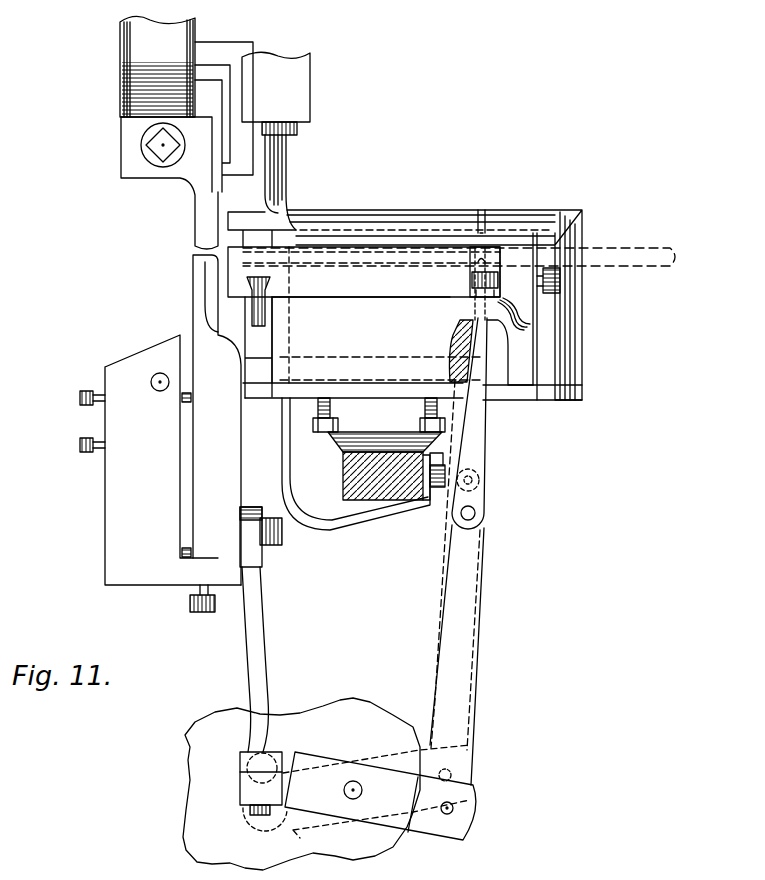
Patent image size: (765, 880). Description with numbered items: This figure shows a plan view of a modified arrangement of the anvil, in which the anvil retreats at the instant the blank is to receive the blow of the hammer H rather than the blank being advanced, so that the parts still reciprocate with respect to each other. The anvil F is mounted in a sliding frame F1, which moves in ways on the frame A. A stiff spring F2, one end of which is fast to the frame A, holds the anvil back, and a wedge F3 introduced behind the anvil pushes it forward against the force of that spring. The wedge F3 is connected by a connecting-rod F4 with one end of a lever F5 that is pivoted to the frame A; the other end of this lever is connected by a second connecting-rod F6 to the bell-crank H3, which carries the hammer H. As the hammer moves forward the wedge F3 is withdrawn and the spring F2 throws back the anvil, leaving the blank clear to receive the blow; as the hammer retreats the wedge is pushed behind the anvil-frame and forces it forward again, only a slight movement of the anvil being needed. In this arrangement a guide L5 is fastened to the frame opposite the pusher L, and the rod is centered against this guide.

The pusher L is at (290, 192).
The guide L5 is at (270, 287).
The anvil F is at (451, 321).
The sliding frame F1 is at (377, 340).
The spring F2 is at (322, 530).
The wedge F3 is at (480, 443).
The connecting-rod F4 is at (470, 632).
The lever F5 is at (379, 792).
The connecting-rod F6 is at (260, 652).
The hammer H is at (217, 420).
The bell-crank H3 is at (160, 473).
The frame A is at (314, 651).